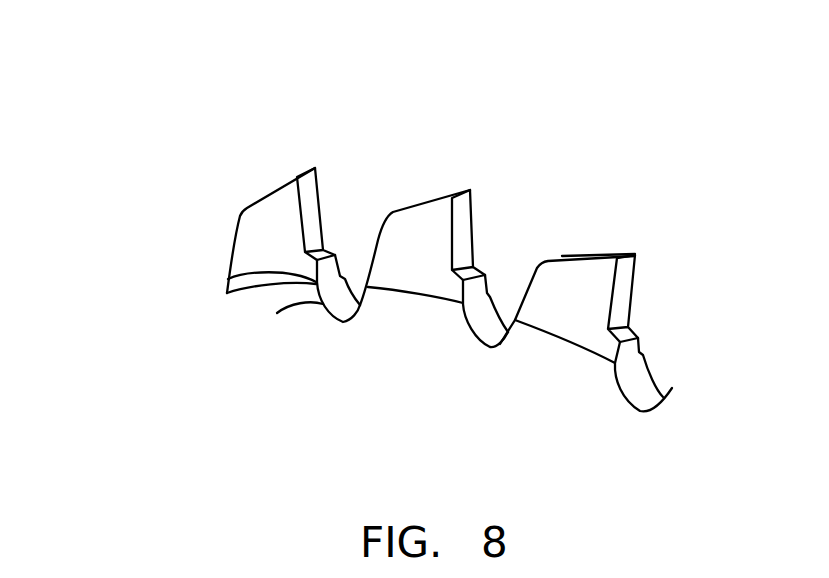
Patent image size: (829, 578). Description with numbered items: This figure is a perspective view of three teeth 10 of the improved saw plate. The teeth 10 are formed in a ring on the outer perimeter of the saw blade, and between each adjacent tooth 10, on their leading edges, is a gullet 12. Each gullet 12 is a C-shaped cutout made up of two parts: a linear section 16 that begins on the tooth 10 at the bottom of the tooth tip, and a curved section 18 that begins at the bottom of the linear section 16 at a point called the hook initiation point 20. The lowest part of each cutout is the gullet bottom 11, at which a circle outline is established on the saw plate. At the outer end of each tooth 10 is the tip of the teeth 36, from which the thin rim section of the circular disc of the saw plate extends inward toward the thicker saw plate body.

The tooth 10 is at (394, 238).
The gullet bottom 11 is at (500, 344).
The gullet 12 is at (478, 238).
The linear section 16 is at (338, 262).
The curved section 18 is at (277, 313).
The hook initiation point 20 is at (228, 279).
The tip of the teeth 36 is at (637, 257).